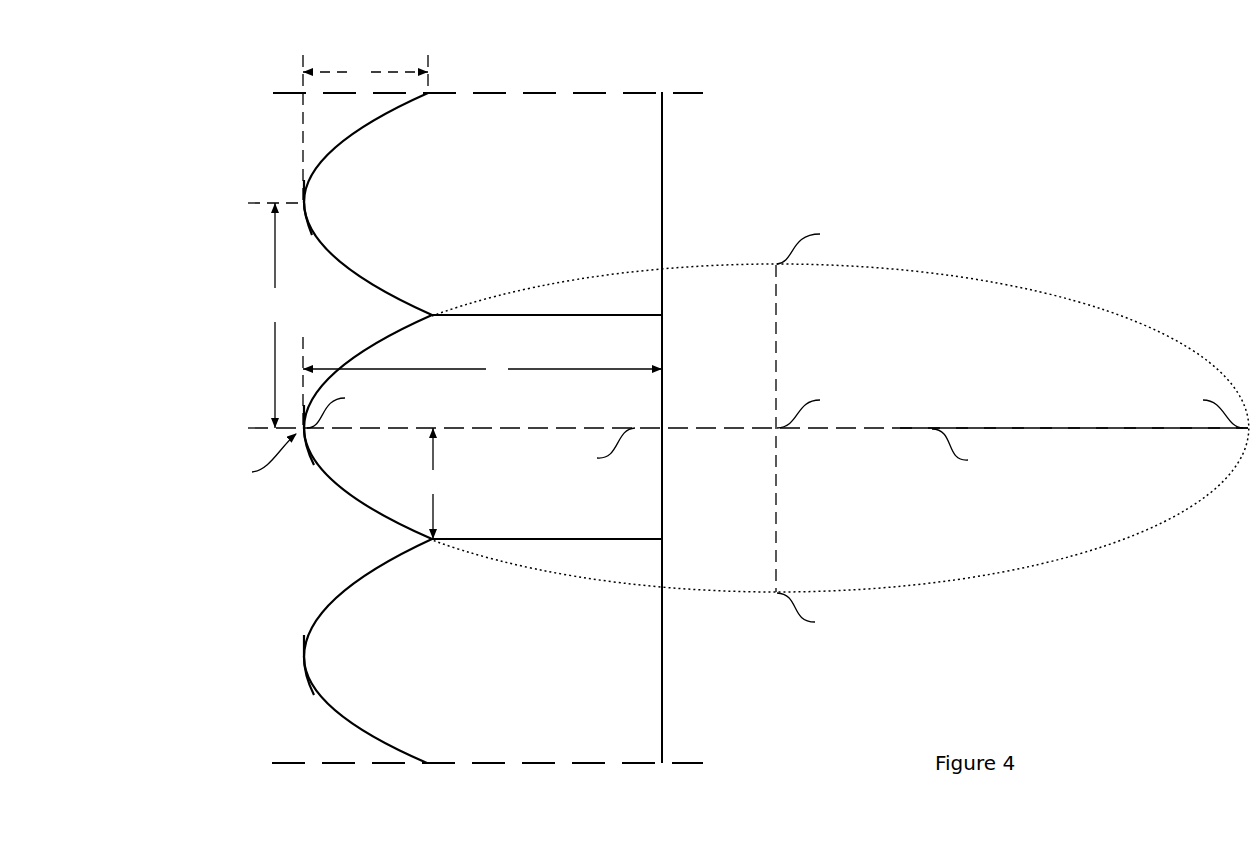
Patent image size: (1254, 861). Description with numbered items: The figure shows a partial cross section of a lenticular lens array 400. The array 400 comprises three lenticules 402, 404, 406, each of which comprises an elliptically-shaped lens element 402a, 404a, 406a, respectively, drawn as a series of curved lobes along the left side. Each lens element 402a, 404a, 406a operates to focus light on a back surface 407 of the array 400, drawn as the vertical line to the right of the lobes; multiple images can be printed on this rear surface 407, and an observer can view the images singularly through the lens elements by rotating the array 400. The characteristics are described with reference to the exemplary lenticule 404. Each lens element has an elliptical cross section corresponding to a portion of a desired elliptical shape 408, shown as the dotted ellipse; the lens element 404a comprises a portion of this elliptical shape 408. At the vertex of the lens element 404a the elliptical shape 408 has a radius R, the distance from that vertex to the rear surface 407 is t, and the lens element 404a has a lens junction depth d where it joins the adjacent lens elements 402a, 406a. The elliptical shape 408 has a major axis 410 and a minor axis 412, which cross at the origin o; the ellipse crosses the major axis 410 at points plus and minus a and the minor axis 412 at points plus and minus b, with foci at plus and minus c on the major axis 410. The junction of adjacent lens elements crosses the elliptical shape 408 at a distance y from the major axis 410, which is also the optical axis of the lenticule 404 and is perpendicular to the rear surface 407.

The lenticular lens array 400 is at (201, 64).
The lenticule 402 is at (350, 167).
The lens element 402a is at (305, 188).
The lenticule 404 is at (365, 465).
The lens element 404a is at (370, 517).
The lenticule 406 is at (364, 638).
The lens element 406a is at (335, 715).
The back surface 407 is at (662, 175).
The elliptical shape 408 is at (990, 282).
The major axis 410 is at (1050, 429).
The minor axis 412 is at (776, 377).